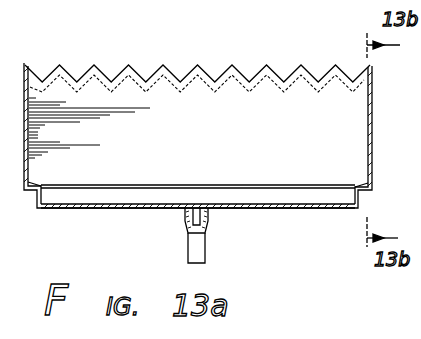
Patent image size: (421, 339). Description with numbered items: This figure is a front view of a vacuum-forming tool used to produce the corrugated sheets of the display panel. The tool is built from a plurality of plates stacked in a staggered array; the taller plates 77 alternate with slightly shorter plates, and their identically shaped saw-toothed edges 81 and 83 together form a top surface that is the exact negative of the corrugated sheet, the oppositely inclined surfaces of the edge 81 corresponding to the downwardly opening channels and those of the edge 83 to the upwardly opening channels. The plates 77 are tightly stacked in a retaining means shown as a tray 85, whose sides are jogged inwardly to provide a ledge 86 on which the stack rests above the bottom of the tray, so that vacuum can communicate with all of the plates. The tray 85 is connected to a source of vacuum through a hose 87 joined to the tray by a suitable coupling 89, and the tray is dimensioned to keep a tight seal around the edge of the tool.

The taller plates 77 is at (167, 92).
The saw-toothed edge 81 is at (237, 70).
The saw-toothed edge 83 is at (280, 72).
The tray 85 is at (82, 210).
The ledge 86 is at (34, 187).
The coupling 89 is at (206, 222).
The hose 87 is at (203, 249).